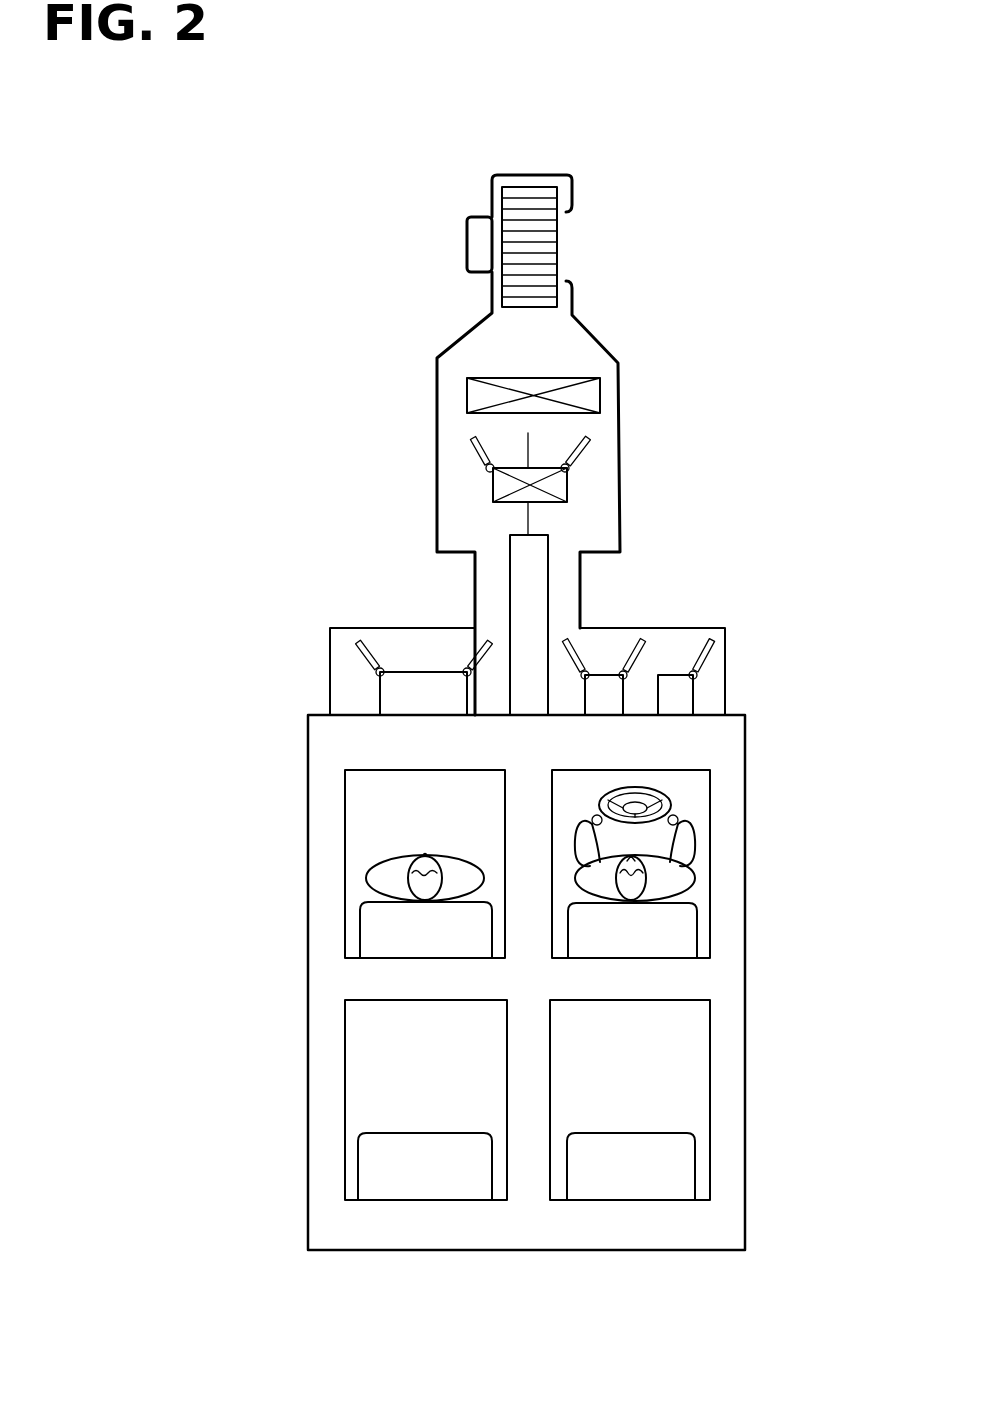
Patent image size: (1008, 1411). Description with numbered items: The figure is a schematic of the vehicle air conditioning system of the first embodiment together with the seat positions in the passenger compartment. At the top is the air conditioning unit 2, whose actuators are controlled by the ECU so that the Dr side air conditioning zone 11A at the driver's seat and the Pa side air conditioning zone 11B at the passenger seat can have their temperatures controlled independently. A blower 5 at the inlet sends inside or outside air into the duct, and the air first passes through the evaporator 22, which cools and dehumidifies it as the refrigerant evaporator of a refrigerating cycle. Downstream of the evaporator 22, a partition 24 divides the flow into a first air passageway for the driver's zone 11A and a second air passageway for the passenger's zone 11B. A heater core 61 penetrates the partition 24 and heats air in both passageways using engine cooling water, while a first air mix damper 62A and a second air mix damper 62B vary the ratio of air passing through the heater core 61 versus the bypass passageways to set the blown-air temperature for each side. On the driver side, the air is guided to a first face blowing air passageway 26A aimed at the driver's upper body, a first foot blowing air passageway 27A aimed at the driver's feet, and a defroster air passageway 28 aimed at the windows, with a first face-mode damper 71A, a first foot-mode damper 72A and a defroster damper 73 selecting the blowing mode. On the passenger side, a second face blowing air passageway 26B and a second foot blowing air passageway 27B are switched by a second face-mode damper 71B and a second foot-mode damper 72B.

The air conditioning unit 2 is at (612, 265).
The blower 5 is at (458, 228).
The evaporator 22 is at (590, 393).
The heater core 61 is at (500, 487).
The first air mix damper 62A is at (585, 455).
The second air mix damper 62B is at (480, 453).
The partition 24 is at (530, 515).
The first foot blowing air passageway 27A is at (565, 707).
The second foot blowing air passageway 27B is at (340, 688).
The first face blowing air passageway 26A is at (712, 693).
The second face blowing air passageway 26B is at (488, 706).
The defroster air passageway 28 is at (640, 707).
The first face-mode damper 71A is at (705, 638).
The first foot-mode damper 72A is at (585, 658).
The center outlet door 73 is at (638, 632).
The second face-mode damper 71B is at (482, 665).
The second foot-mode damper 72B is at (360, 645).
The air conditioning zone 11A is at (702, 848).
The air conditioning zone 11B is at (355, 843).